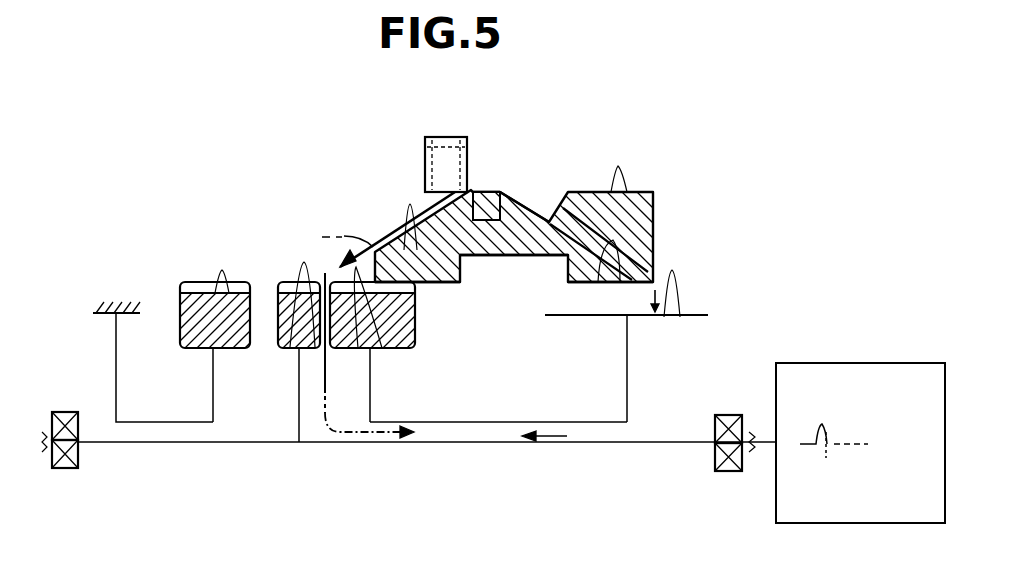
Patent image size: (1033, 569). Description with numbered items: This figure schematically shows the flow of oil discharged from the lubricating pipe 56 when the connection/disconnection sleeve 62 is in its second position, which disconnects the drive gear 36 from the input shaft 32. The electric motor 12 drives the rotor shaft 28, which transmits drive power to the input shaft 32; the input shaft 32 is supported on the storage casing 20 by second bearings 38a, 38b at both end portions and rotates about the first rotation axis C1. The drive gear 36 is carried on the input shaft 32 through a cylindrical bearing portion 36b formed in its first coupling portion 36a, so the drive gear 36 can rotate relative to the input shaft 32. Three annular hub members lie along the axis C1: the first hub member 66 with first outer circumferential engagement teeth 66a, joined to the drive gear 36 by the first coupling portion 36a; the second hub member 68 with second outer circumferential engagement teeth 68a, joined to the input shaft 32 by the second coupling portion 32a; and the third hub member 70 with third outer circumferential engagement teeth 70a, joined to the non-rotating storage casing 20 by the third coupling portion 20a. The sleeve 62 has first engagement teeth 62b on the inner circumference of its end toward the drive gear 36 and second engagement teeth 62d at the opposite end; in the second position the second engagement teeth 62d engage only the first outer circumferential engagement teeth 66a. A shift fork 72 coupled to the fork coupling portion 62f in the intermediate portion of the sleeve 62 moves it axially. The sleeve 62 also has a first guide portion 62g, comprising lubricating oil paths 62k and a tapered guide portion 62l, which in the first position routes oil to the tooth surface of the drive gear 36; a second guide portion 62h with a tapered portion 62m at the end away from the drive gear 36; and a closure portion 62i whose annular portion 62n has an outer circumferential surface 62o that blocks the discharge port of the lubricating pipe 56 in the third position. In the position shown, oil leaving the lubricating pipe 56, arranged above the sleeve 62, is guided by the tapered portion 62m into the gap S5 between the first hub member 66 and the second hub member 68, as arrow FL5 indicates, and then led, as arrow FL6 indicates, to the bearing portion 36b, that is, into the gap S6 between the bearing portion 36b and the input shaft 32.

The electric motor 12 is at (858, 380).
The storage casing 20 is at (110, 304).
The third coupling portion 20a is at (152, 420).
The rotor shaft 28 is at (757, 433).
The input shaft 32 is at (660, 437).
The second coupling portion 32a is at (292, 440).
The drive gear 36 is at (681, 318).
The first coupling portion 36a is at (640, 398).
The bearing portion 36b is at (487, 421).
The second bearing 38a is at (727, 472).
The second bearing 38b is at (63, 470).
The lubricating pipe 56 is at (426, 150).
The connection/disconnection sleeve 62 is at (364, 186).
The first engagement teeth 62b is at (590, 285).
The second engagement teeth 62d is at (428, 287).
The fork coupling portion 62f is at (492, 191).
The first guide portion 62g is at (541, 216).
The second guide portion 62h is at (385, 223).
The closure portion 62i is at (666, 214).
The lubricating oil paths 62k is at (613, 298).
The tapered guide portion 62l is at (520, 244).
The tapered portion 62m is at (433, 255).
The annular portion 62n is at (656, 232).
The outer circumferential surface 62o is at (648, 235).
The first hub member 66 is at (418, 318).
The first outer circumferential engagement teeth 66a is at (375, 343).
The second hub member 68 is at (283, 302).
The second outer circumferential engagement teeth 68a is at (293, 350).
The third hub member 70 is at (184, 320).
The third outer circumferential engagement teeth 70a is at (221, 350).
The shift fork 72 is at (485, 190).
The oil flow arrow FL5 is at (326, 237).
The oil flow arrow FL6 is at (360, 440).
The gap S5 is at (349, 343).
The gap S6 is at (566, 437).
The first rotation axis C1 is at (834, 456).